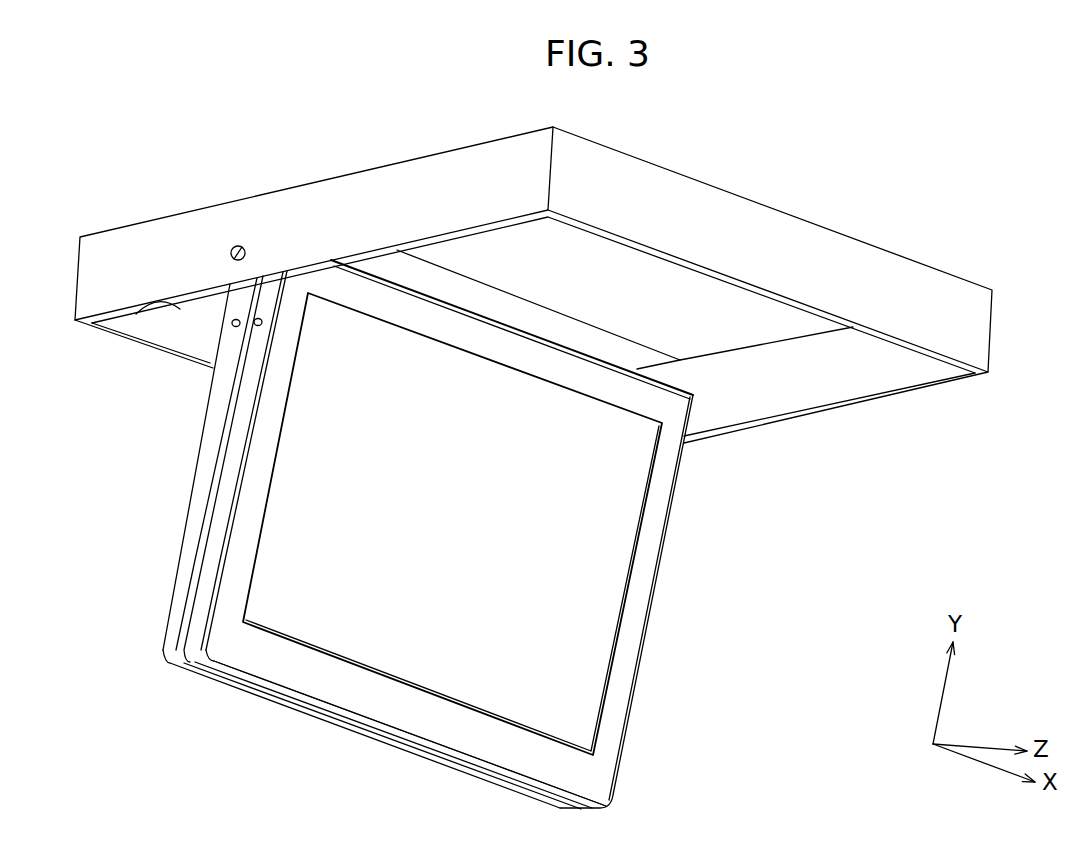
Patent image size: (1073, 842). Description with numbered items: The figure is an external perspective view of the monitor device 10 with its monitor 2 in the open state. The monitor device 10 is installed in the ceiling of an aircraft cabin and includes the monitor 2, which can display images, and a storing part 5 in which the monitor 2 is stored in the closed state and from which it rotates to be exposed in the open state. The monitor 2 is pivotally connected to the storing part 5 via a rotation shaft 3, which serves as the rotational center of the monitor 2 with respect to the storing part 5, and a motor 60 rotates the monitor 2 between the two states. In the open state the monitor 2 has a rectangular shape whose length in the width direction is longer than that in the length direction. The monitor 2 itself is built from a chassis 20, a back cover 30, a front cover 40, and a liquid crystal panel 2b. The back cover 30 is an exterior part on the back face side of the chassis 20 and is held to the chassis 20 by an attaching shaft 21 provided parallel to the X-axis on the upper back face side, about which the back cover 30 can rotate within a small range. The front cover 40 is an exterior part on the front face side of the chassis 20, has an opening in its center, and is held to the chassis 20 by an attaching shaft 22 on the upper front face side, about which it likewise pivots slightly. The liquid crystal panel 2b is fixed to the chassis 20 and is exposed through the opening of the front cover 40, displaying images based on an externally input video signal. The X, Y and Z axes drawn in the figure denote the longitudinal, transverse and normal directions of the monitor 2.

The monitor device 10 is at (118, 183).
The rotation shaft 3 is at (236, 246).
The storing part 5 is at (931, 266).
The motor 60 is at (188, 320).
The monitor 2 is at (692, 701).
The liquid crystal panel 2b is at (597, 565).
The chassis 20 is at (213, 498).
The attaching shaft 21 is at (233, 325).
The attaching shaft 22 is at (256, 327).
The back cover 30 is at (183, 581).
The front cover 40 is at (405, 697).